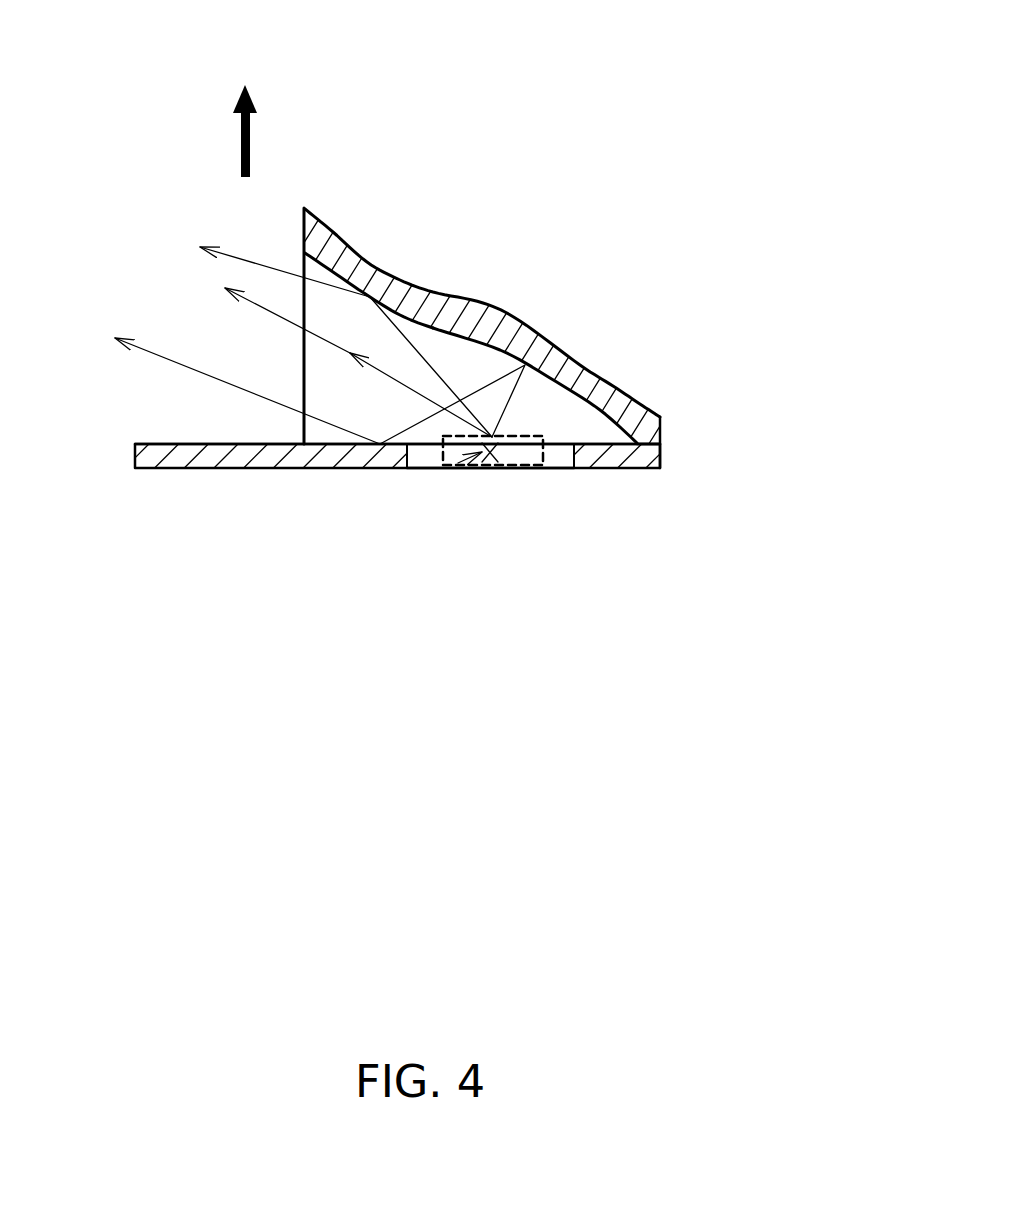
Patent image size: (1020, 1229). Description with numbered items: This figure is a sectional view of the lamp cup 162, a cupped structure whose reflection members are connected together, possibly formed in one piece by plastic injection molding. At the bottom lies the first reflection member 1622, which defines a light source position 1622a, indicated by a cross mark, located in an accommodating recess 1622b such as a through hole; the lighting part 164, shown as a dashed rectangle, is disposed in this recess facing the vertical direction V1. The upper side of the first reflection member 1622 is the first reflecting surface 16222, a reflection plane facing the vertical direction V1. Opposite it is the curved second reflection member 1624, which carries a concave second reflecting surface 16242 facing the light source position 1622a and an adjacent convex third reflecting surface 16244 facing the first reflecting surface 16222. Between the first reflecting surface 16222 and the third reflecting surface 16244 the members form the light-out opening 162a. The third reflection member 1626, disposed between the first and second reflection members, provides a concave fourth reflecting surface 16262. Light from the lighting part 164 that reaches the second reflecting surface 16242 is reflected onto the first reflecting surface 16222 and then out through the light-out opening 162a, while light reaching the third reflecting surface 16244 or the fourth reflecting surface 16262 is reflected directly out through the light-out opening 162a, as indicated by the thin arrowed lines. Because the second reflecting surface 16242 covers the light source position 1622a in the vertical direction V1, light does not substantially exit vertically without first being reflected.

The lamp cup 162 is at (565, 95).
The light-out opening 162a is at (252, 347).
The first reflection member 1622 is at (305, 468).
The first reflecting surface 16222 is at (240, 443).
The light source position 1622a is at (450, 466).
The accommodating recess 1622b is at (424, 466).
The second reflection member 1624 is at (478, 308).
The second reflecting surface 16242 is at (551, 381).
The third reflecting surface 16244 is at (407, 318).
The third reflection member 1626 is at (714, 383).
The fourth reflecting surface 16262 is at (577, 423).
The lighting part 164 is at (543, 452).
The vertical direction V1 is at (240, 142).